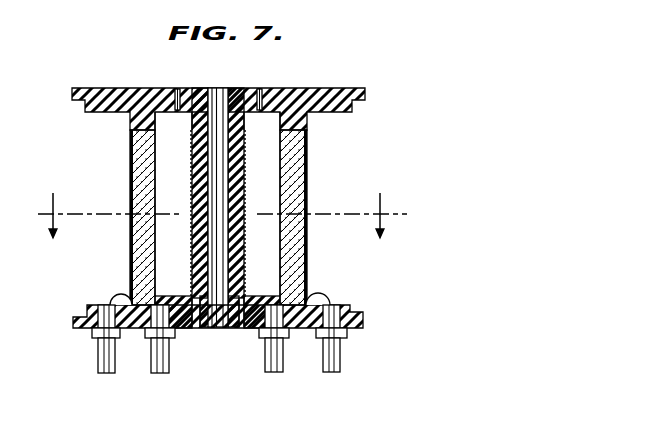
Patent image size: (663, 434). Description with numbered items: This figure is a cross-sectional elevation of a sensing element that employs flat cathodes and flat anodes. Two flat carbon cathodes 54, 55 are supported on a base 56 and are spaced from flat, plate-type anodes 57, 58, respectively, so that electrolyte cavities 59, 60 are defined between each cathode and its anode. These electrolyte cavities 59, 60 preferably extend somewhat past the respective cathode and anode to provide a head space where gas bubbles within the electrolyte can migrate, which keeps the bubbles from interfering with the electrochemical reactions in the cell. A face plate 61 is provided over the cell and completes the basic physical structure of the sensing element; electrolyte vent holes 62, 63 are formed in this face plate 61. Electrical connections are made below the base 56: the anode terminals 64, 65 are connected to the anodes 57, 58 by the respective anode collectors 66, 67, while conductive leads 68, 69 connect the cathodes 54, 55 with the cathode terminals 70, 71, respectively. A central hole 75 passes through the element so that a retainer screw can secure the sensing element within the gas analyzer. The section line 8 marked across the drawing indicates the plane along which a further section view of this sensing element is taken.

The flat carbon cathode 54 is at (138, 167).
The flat carbon cathode 55 is at (297, 158).
The base 56 is at (196, 329).
The flat plate-type anode 57 is at (192, 153).
The flat plate-type anode 58 is at (245, 153).
The electrolyte cavity 59 is at (175, 254).
The electrolyte cavity 60 is at (267, 257).
The face plate 61 is at (196, 98).
The electrolyte vent hole 62 is at (172, 100).
The electrolyte vent hole 63 is at (259, 101).
The anode terminal 64 is at (167, 368).
The anode terminal 65 is at (273, 371).
The anode collector 66 is at (191, 330).
The anode collector 67 is at (246, 315).
The conductive lead 68 is at (118, 298).
The conductive lead 69 is at (321, 298).
The cathode terminal 70 is at (103, 361).
The cathode terminal 71 is at (334, 361).
The hole 75 is at (220, 98).
The section line 8— 8 is at (220, 214).